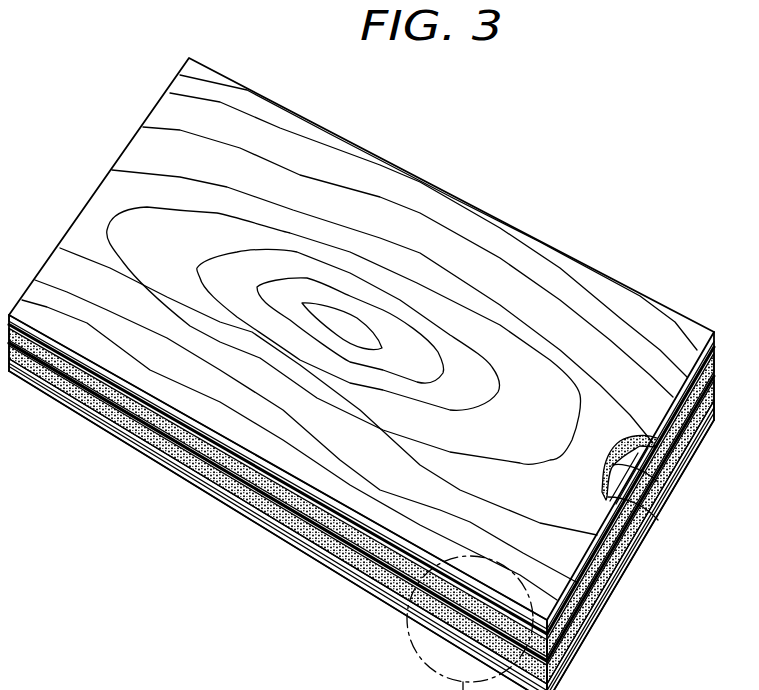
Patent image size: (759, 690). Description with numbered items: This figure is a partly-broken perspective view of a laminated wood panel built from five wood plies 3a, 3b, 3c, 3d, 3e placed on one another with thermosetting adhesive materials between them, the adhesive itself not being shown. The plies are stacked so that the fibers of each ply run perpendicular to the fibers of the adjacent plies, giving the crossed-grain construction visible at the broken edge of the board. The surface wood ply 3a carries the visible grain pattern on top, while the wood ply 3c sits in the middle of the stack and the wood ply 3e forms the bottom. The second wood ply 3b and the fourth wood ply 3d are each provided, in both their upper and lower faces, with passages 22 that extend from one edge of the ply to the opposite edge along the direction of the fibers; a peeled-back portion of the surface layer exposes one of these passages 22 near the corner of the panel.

The wood ply 3a is at (70, 355).
The wood ply 3b is at (110, 390).
The wood ply 3c is at (147, 422).
The wood ply 3d is at (243, 494).
The wood ply 3e is at (299, 536).
The passages 22 is at (654, 498).